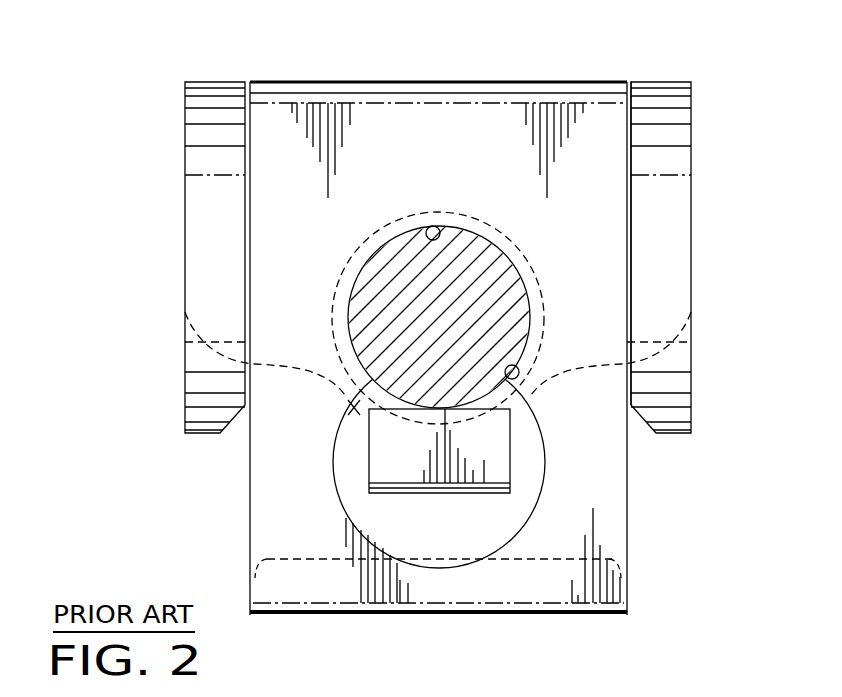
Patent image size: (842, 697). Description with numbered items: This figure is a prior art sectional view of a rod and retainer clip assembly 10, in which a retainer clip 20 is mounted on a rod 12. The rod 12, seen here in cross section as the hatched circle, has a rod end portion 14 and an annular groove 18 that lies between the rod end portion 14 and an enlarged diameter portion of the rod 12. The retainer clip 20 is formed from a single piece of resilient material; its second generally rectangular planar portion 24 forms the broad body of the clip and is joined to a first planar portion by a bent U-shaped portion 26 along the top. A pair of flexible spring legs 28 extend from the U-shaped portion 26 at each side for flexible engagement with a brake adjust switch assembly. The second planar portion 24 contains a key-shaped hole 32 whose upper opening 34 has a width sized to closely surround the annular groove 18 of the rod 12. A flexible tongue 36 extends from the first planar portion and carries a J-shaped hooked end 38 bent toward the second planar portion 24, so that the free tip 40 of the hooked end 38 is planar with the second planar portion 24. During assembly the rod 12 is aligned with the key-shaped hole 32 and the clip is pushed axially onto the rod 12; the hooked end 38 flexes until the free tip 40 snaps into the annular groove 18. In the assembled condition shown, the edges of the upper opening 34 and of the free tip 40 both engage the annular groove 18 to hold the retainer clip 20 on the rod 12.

The rod and retainer clip assembly 10 is at (435, 333).
The rod 12 is at (472, 315).
The rod end portion 14 is at (500, 395).
The annular groove 18 is at (505, 380).
The retainer clip 20 is at (708, 139).
The second generally rectangular planar portion 24 is at (603, 478).
The bent U-shaped portion 26 is at (558, 83).
The flexible spring legs 28 is at (202, 213).
The key-shaped hole 32 is at (493, 534).
The upper opening 34 is at (422, 230).
The flexible tongue 36 is at (355, 405).
The J-shaped hooked end 38 is at (428, 510).
The free tip 40 is at (487, 465).